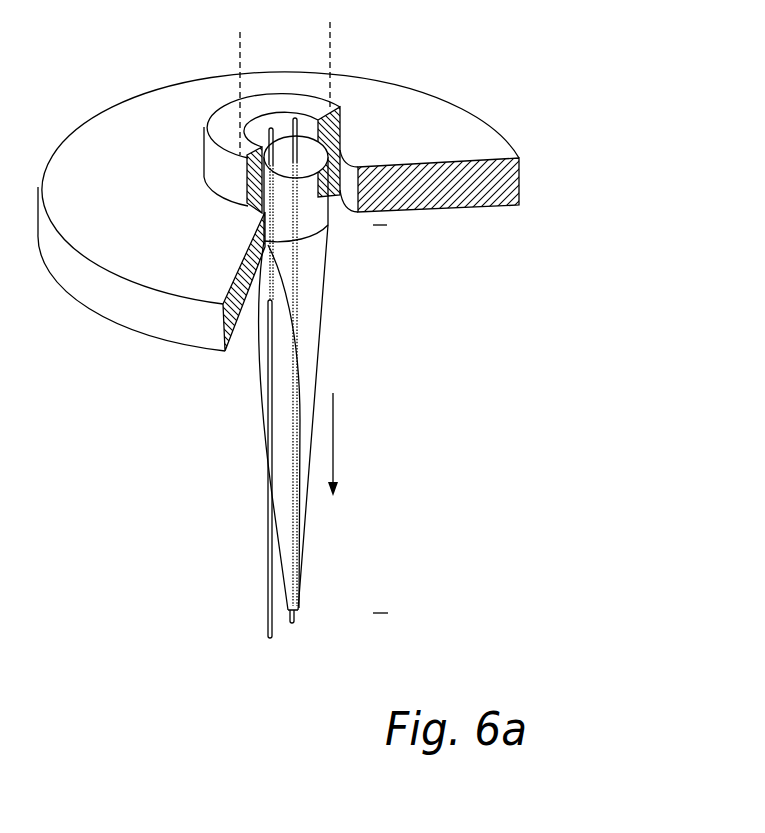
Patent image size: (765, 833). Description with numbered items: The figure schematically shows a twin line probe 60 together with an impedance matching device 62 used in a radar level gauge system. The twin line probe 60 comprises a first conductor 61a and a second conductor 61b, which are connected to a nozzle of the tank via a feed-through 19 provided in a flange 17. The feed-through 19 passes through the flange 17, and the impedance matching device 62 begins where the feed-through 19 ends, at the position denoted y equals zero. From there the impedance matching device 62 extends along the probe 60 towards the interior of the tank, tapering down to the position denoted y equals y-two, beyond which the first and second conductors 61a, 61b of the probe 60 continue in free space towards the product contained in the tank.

The flange 17 is at (470, 133).
The feed-through 19 is at (350, 102).
The twin line probe 60 is at (294, 348).
The first conductor 61a is at (295, 617).
The second conductor 61b is at (267, 636).
The impedance matching device 62 is at (308, 337).